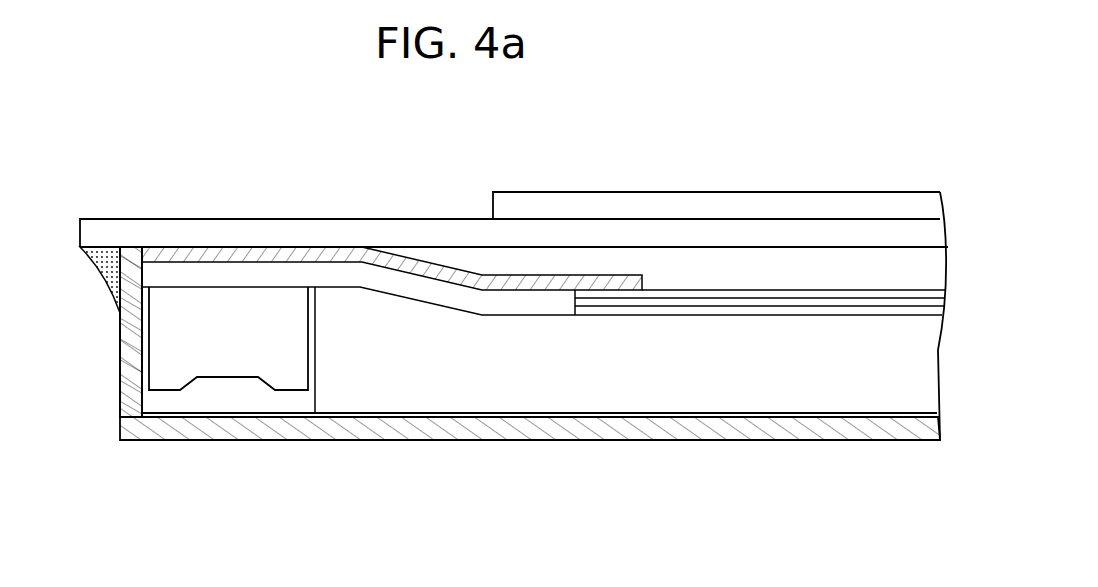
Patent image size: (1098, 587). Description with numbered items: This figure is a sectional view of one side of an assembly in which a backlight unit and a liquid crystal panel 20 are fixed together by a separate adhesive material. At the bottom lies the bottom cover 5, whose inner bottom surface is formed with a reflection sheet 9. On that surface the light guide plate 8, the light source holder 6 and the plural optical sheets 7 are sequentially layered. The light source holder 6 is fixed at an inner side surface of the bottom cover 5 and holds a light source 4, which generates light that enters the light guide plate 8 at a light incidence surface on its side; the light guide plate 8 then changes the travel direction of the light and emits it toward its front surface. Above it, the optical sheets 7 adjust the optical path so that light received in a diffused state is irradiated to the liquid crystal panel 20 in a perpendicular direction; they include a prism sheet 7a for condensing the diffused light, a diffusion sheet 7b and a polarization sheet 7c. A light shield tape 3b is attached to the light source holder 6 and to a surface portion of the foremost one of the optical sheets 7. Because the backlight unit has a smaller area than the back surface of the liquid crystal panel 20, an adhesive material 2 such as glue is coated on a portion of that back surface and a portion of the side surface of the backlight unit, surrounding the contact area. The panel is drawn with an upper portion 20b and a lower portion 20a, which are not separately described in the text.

The adhesive material 2 is at (105, 264).
The light shield tape 3b is at (162, 252).
The light source 4 is at (283, 377).
The bottom cover 5 is at (337, 430).
The light source holder 6 is at (224, 273).
The optical sheets 7 is at (817, 307).
The prism sheet 7a is at (797, 334).
The diffusion sheet 7b is at (940, 304).
The polarization sheet 7c is at (940, 292).
The light guide plate 8 is at (401, 397).
The reflection sheet 9 is at (450, 413).
The liquid crystal panel 20 is at (579, 303).
The window base 20a is at (937, 233).
The window protrusion 20b is at (935, 204).